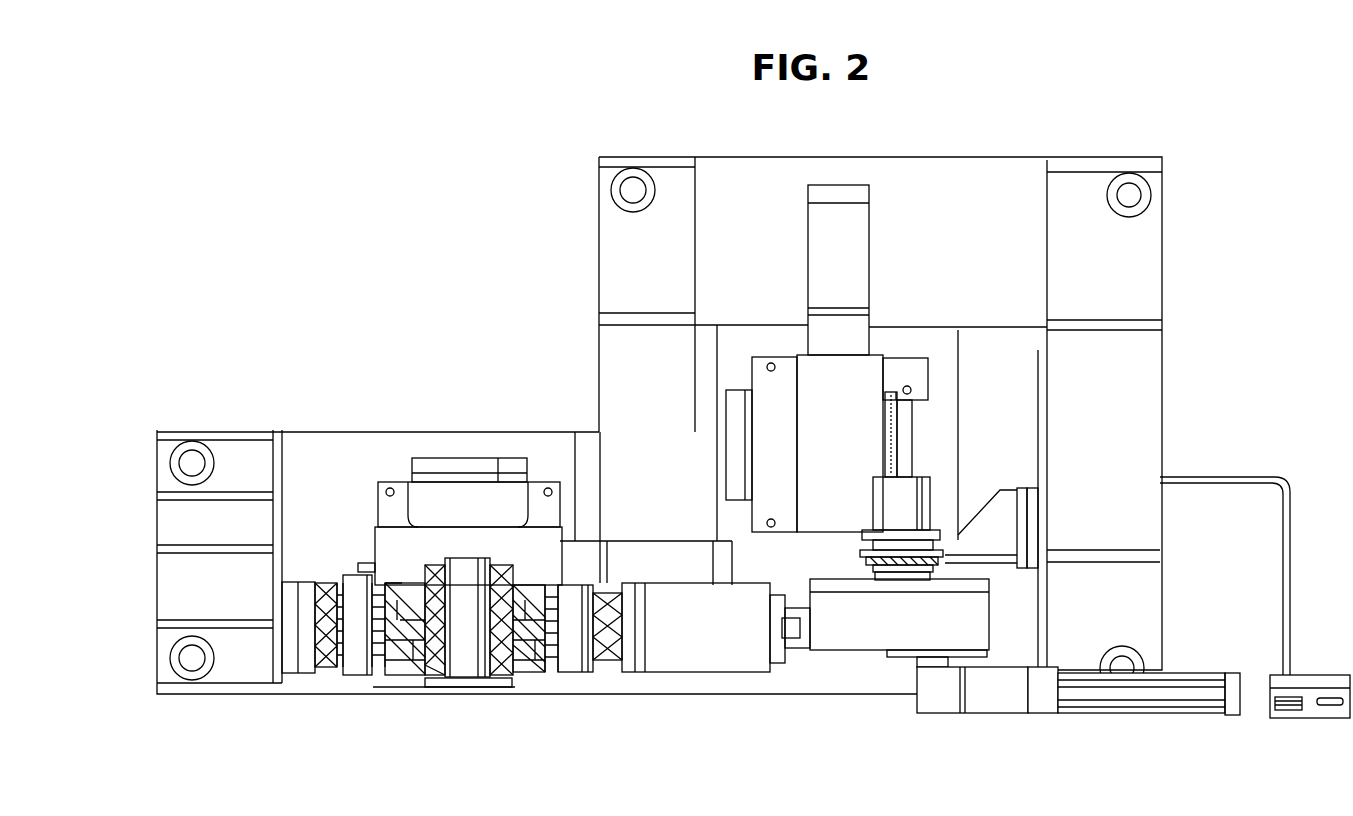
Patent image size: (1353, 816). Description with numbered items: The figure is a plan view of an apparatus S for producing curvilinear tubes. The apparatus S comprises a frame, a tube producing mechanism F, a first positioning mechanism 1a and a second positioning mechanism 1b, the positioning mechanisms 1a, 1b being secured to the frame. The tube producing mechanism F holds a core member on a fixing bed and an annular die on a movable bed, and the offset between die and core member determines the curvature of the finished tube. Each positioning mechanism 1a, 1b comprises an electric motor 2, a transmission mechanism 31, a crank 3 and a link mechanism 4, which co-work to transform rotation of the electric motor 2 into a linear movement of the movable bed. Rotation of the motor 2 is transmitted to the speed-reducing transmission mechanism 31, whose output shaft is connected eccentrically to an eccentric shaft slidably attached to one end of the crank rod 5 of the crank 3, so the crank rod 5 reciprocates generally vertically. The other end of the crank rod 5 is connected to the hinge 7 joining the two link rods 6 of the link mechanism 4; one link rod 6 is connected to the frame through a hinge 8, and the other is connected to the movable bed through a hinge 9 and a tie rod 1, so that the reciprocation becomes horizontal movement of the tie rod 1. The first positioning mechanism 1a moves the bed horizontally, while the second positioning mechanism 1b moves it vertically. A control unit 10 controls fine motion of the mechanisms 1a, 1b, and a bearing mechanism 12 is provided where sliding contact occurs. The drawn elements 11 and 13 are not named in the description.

The tie rod 1 is at (447, 458).
The first positioning mechanism 1a is at (405, 482).
The second positioning mechanism 1b is at (896, 400).
The electric motor 2 is at (857, 243).
The crank 3 is at (913, 437).
The link mechanism 4 is at (383, 668).
The crank rod 5 is at (903, 420).
The link rod 6 is at (398, 585).
The hinge 7 is at (465, 680).
The hinge 8 is at (303, 665).
The hinge 9 is at (620, 660).
The control unit 10 is at (1305, 675).
The frame wall 11 is at (547, 460).
The bearing mechanism 12 is at (333, 667).
The cylinder 13 is at (928, 690).
The transmission mechanism 31 is at (818, 417).
The tube producing mechanism F is at (847, 635).
The apparatus S is at (1165, 430).